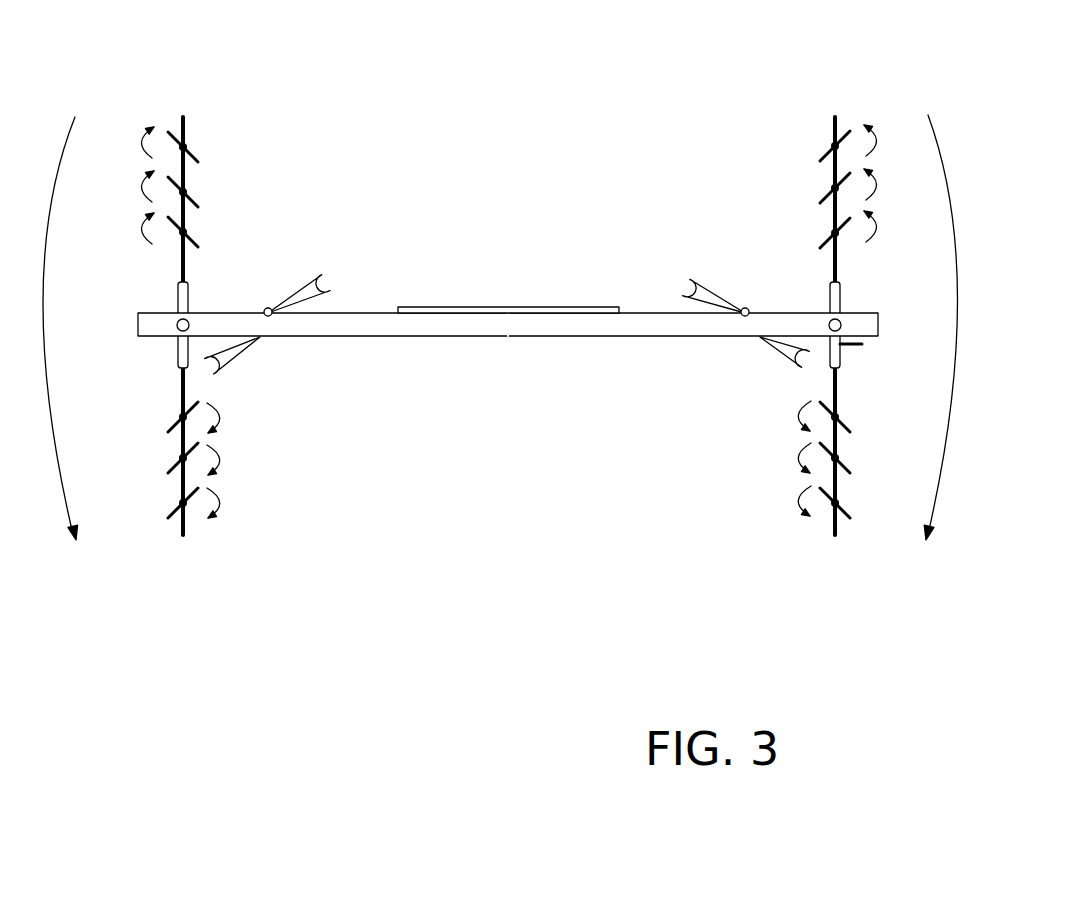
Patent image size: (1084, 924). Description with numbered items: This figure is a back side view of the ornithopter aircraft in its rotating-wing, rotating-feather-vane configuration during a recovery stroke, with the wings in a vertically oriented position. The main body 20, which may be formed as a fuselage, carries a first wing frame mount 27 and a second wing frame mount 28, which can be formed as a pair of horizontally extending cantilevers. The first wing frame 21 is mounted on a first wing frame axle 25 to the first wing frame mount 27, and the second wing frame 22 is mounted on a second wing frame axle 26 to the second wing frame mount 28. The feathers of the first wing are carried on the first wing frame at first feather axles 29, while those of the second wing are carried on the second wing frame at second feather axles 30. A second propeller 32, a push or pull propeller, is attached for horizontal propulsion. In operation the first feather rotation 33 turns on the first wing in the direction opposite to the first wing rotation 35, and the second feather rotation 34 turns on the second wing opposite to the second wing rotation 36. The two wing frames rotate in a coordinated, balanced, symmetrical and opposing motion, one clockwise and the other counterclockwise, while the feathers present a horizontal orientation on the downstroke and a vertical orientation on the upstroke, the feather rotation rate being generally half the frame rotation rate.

The main body 20 is at (527, 307).
The first wing frame 21 is at (835, 117).
The second wing frame 22 is at (183, 117).
The first wing frame axle 25 is at (703, 290).
The second wing frame axle 26 is at (178, 330).
The first wing frame mount 27 is at (646, 323).
The second wing frame mount 28 is at (337, 323).
The first feather axles 29 is at (833, 192).
The second feather axles 30 is at (185, 193).
The second propeller 32 is at (325, 284).
The first feather rotation 33 is at (880, 123).
The second feather rotation 34 is at (155, 128).
The first wing rotation 35 is at (957, 272).
The second wing rotation 36 is at (48, 402).